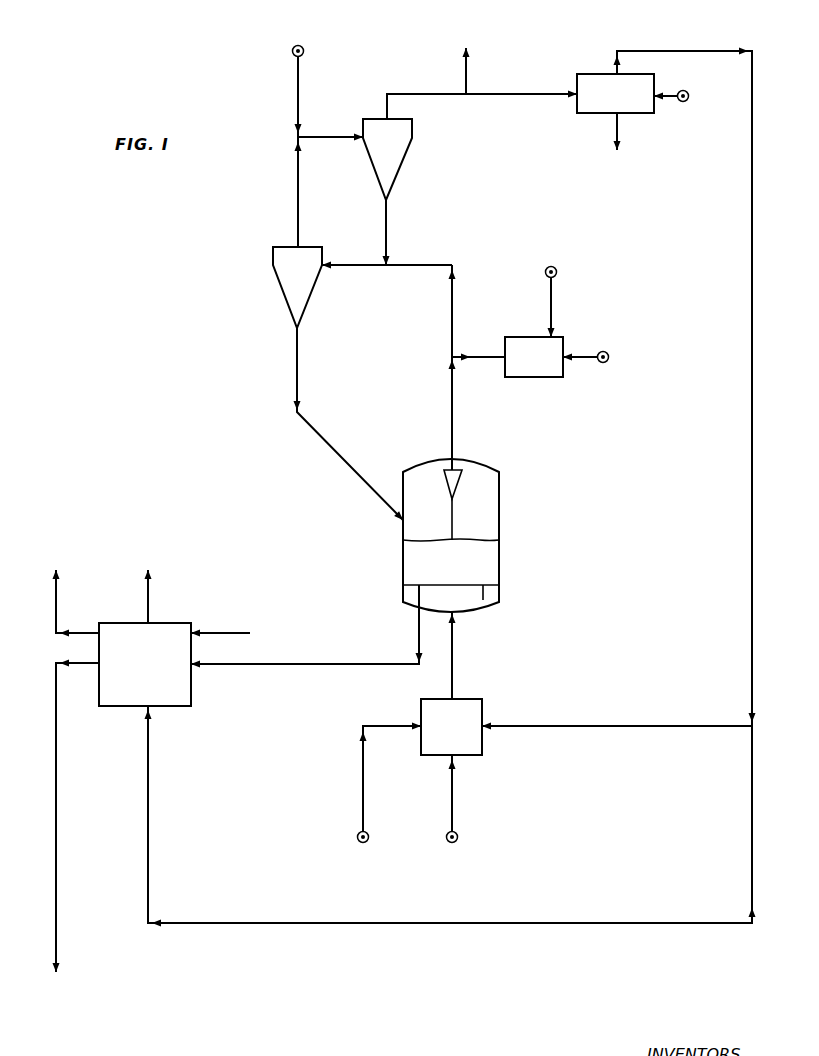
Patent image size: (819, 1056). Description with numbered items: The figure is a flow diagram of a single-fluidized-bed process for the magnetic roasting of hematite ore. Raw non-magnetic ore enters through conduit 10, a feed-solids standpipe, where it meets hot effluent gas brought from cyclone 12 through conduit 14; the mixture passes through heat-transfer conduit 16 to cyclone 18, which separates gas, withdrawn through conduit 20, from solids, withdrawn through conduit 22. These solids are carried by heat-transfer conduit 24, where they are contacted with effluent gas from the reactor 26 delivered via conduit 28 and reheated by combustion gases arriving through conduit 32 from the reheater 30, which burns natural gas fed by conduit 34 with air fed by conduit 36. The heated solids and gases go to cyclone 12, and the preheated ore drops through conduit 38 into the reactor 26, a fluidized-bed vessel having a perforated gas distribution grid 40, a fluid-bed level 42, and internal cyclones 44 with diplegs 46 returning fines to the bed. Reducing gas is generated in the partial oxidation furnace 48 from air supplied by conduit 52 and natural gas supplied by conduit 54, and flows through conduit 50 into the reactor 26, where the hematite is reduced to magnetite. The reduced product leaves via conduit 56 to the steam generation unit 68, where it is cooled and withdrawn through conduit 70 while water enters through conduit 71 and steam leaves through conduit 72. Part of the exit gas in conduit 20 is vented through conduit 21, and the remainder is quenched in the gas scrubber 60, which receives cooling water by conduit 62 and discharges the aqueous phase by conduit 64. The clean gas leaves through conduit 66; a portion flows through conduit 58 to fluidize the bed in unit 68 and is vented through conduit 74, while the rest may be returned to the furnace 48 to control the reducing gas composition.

The conduit 10 is at (297, 79).
The cyclone 12 is at (266, 277).
The conduit 14 is at (298, 183).
The heat-transfer conduit 16 is at (347, 137).
The cyclone 18 is at (416, 146).
The conduit 20 is at (412, 94).
The conduit 21 is at (466, 67).
The conduit 22 is at (386, 221).
The heat-transfer conduit 24 is at (360, 266).
The reactor 26 is at (504, 519).
The conduit 28 is at (452, 400).
The reheater 30 is at (566, 333).
The conduit 32 is at (480, 358).
The conduit 34 is at (586, 358).
The conduit 36 is at (551, 302).
The conduit 38 is at (323, 440).
The perforated gas distribution grid 40 is at (483, 598).
The fluid-bed level 42 is at (472, 540).
The internal cyclone 44 is at (462, 480).
The dipleg 46 is at (452, 512).
The partial oxidation furnace 48 is at (490, 764).
The conduit 50 is at (453, 660).
The conduit 52 is at (363, 763).
The conduit 54 is at (452, 783).
The conduit 56 is at (355, 664).
The conduit 58 is at (148, 832).
The gas scrubber 60 is at (568, 70).
The conduit 62 is at (663, 96).
The conduit 64 is at (620, 128).
The conduit 66 is at (680, 51).
The steam generation unit 68 is at (175, 614).
The conduit 70 is at (56, 806).
The conduit 71 is at (228, 633).
The conduit 72 is at (56, 605).
The conduit 74 is at (148, 603).